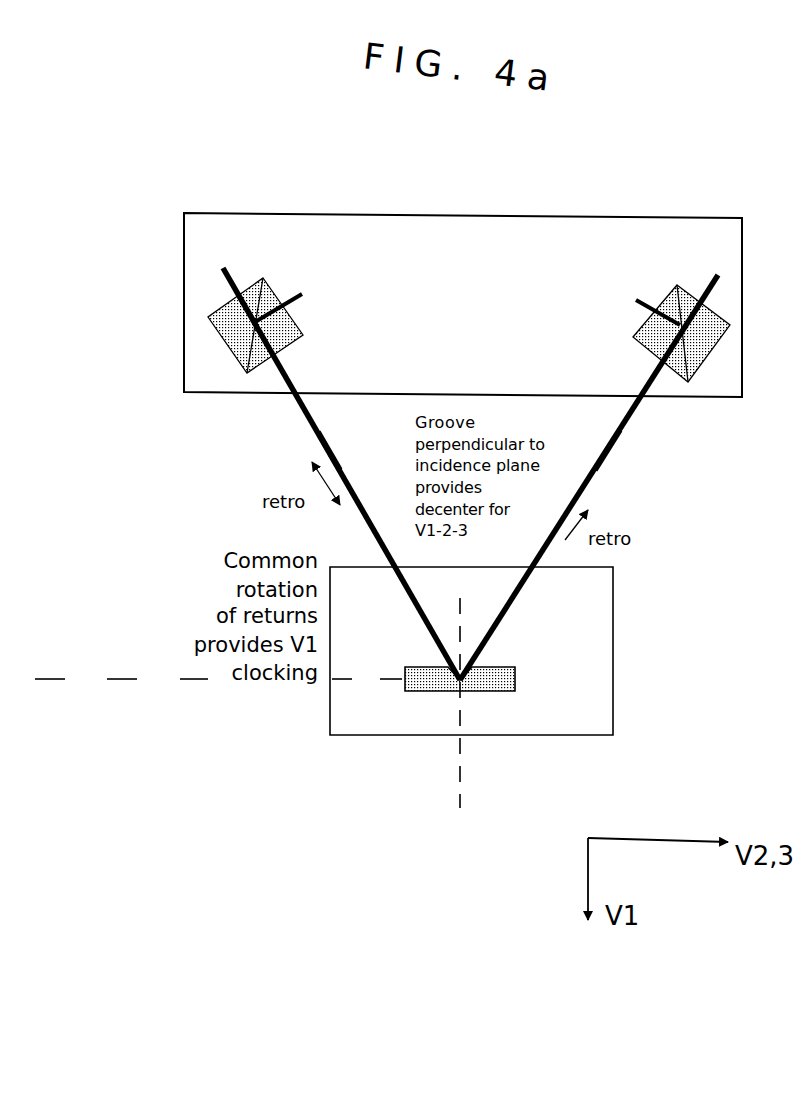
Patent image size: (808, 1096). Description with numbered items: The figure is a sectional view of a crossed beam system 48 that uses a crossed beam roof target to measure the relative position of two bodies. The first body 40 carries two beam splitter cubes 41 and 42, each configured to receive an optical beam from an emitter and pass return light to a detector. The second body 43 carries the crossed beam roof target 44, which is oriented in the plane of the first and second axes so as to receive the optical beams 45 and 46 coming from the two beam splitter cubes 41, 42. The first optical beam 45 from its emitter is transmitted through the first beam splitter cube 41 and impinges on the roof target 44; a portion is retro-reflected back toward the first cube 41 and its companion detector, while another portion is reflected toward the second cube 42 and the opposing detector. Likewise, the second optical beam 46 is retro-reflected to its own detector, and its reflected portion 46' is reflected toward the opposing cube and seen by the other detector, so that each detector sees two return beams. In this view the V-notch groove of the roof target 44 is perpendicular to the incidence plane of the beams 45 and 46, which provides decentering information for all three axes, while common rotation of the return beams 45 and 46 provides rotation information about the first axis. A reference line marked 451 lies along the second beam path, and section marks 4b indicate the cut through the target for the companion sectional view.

The body 1 40 is at (365, 213).
The crossed beam system 48 is at (793, 163).
The beam splitter cube 41 is at (300, 342).
The beam splitter cube 42 is at (637, 340).
The optical beam 45 is at (313, 428).
The reflected portion of beam 46 46' is at (355, 438).
The second beam path 451 is at (622, 422).
The optical beam 46 is at (663, 472).
The body 2 43 is at (616, 599).
The crossed beam roof target 44 is at (515, 682).
The section view 4b indicator 4b is at (455, 600).